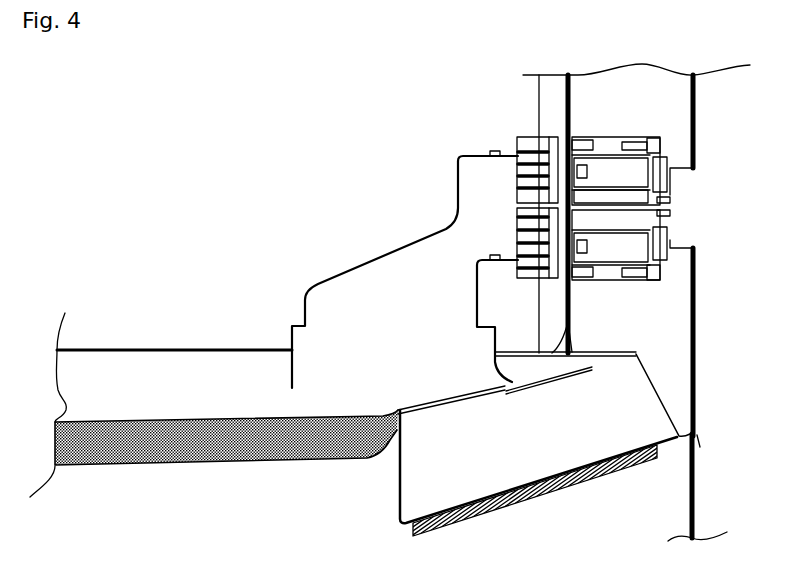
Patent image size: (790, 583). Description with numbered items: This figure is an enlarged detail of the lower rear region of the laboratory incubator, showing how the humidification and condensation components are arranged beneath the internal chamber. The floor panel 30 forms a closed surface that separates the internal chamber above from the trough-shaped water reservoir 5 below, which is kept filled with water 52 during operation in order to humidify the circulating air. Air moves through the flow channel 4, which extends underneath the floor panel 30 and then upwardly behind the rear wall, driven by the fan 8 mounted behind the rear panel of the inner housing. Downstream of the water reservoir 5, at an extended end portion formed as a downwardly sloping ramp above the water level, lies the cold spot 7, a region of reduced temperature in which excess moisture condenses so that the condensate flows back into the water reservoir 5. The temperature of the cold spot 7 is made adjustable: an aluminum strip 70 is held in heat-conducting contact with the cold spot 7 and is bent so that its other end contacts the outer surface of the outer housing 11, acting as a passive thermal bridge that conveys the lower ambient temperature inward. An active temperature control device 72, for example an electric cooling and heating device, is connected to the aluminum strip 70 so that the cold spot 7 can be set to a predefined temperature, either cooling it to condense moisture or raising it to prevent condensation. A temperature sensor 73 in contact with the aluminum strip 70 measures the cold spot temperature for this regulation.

The flow channel 4 is at (645, 103).
The water reservoir 5 is at (226, 467).
The cold spot 7 is at (448, 397).
The fan 8 is at (528, 150).
The outer housing 11 is at (700, 319).
The floor panel 30 is at (213, 350).
The water 52 is at (119, 448).
The aluminum strip 70 is at (398, 478).
The temperature control device 72 is at (505, 500).
The temperature sensor 73 is at (540, 380).